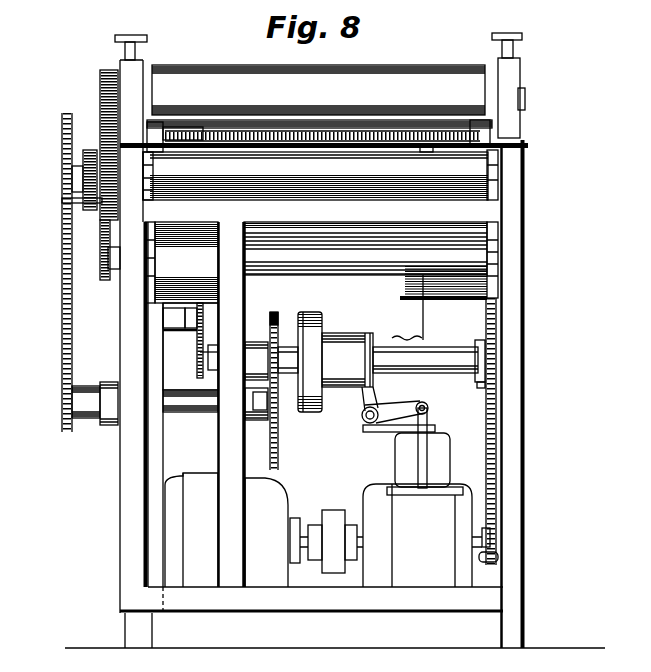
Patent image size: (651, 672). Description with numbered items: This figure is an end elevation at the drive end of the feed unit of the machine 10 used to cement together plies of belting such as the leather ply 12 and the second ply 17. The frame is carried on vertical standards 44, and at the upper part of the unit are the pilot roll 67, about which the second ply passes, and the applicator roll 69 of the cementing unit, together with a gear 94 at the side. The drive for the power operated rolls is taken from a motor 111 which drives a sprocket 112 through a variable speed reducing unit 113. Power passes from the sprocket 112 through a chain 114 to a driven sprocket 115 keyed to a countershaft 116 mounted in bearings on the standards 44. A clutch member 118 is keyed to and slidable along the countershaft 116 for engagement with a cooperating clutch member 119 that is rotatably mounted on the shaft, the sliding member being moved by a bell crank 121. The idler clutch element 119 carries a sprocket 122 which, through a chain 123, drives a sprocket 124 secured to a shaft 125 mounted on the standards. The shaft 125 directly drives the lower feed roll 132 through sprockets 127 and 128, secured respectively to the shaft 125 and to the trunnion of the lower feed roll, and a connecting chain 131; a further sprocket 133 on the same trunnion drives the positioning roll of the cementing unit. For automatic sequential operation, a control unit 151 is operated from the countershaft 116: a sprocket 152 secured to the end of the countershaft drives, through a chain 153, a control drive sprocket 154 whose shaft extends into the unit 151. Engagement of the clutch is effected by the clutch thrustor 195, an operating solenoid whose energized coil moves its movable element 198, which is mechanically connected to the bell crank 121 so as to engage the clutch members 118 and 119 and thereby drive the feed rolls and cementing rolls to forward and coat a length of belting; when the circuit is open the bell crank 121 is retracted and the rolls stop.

The machine 10 is at (120, 49).
The roll or band of leather 12 is at (383, 141).
The ply 17 is at (368, 143).
The vertical standard 44 is at (518, 572).
The pilot roll 67 is at (477, 268).
The applicator roll 69 is at (478, 230).
The drive gear 94 is at (100, 212).
The motor 111 is at (198, 470).
The sprocket 112 is at (483, 556).
The variable speed reducing unit 113 is at (358, 532).
The chain 114 is at (492, 457).
The driven sprocket 115 is at (481, 345).
The countershaft 116 is at (450, 362).
The clutch member 118 is at (347, 360).
The cooperating clutch member 119 is at (315, 315).
The bell crank 121 is at (412, 396).
The sprocket 122 is at (268, 321).
The chain 123 is at (280, 408).
The sprocket 124 is at (264, 422).
The shaft 125 is at (184, 411).
The sprocket 127 is at (72, 402).
The sprocket 128 is at (78, 173).
The connecting chain 131 is at (62, 302).
The lower feed roll 132 is at (320, 175).
The sprocket 133 is at (75, 203).
The control unit 151 is at (155, 452).
The sprocket 152 is at (192, 362).
The chain 153 is at (200, 352).
The control drive sprocket 154 is at (191, 330).
The clutch thrustor 195 is at (400, 457).
The movable element 198 is at (428, 410).